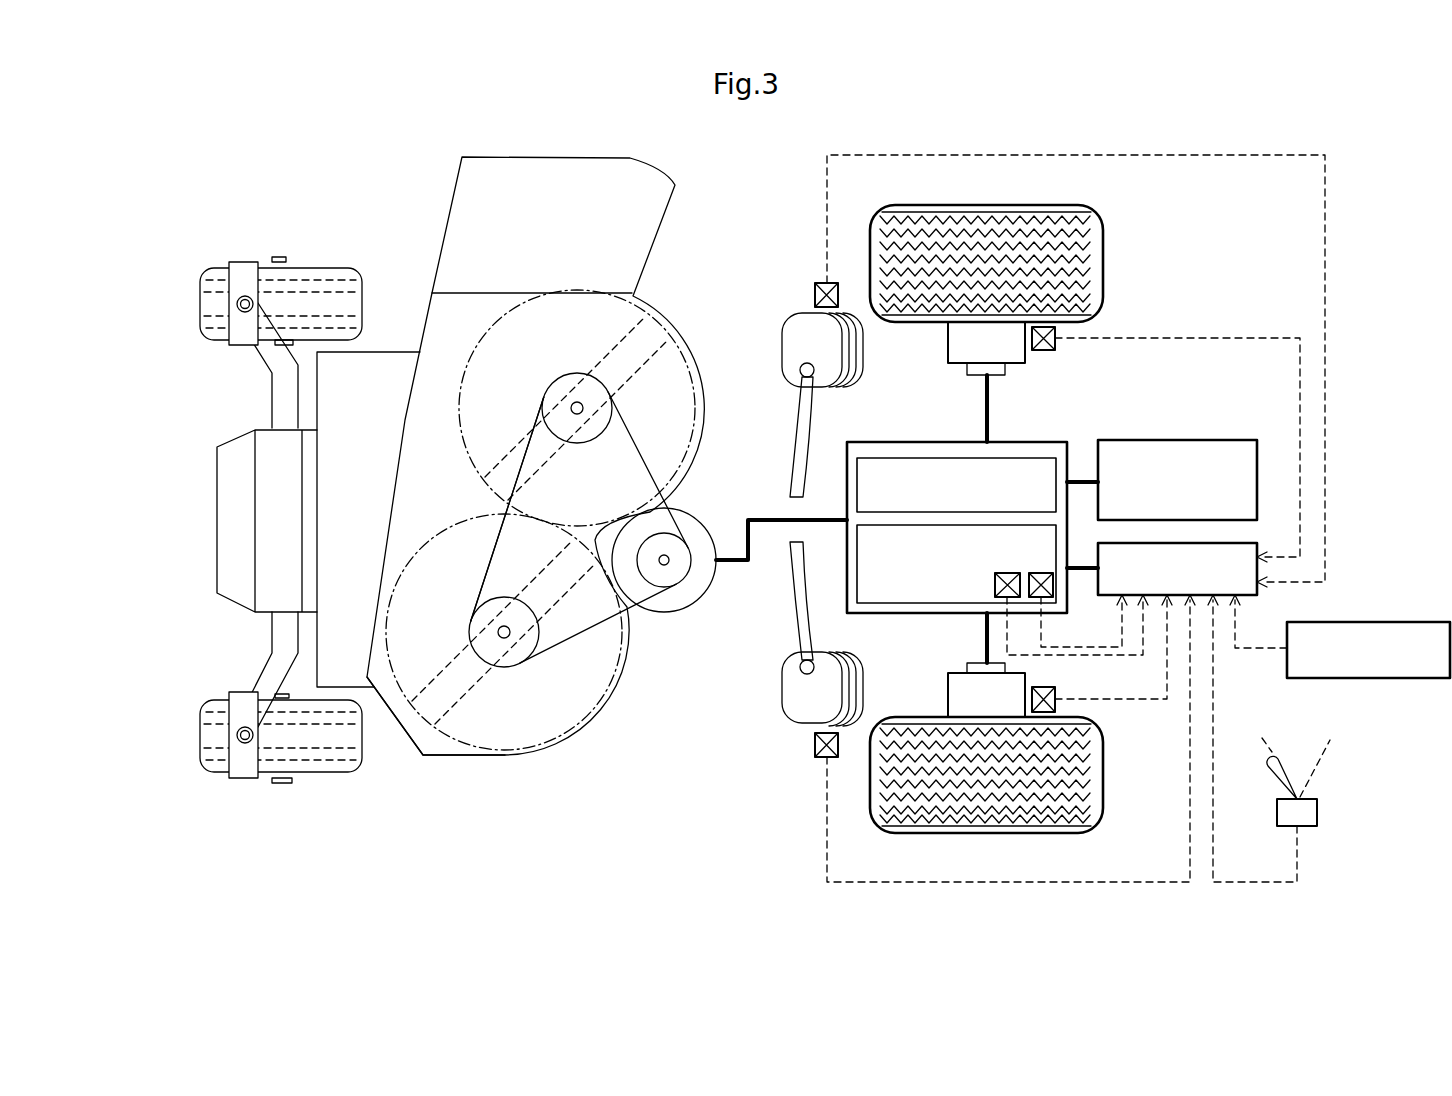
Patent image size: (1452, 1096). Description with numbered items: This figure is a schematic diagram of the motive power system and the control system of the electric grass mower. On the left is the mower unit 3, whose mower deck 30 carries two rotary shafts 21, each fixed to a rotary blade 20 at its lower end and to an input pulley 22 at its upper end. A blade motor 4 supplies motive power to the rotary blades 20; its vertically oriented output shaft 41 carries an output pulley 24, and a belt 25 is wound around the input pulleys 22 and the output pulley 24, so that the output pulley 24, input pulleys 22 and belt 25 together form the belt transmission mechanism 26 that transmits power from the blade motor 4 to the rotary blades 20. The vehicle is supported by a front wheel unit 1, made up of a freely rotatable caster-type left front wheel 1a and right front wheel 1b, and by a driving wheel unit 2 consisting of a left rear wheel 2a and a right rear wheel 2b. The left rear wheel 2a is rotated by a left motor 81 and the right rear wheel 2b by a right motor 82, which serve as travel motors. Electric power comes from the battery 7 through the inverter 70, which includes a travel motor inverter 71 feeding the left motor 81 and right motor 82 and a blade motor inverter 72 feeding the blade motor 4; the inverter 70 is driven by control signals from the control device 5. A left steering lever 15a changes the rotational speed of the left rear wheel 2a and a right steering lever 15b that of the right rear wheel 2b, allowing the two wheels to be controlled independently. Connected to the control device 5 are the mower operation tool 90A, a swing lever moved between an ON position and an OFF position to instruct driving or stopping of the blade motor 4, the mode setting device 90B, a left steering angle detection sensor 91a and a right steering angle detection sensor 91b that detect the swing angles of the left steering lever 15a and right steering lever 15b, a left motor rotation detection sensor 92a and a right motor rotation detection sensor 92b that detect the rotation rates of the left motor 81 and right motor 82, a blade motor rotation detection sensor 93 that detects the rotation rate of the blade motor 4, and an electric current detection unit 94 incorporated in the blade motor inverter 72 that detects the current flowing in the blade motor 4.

The front wheel unit 1 is at (221, 520).
The left front wheel 1a is at (200, 742).
The right front wheel 1b is at (200, 303).
The driving wheel unit 2 is at (986, 522).
The left rear wheel 2a is at (972, 835).
The right rear wheel 2b is at (973, 205).
The mower unit 3 is at (406, 747).
The blade motor 4 is at (704, 612).
The control device 5 is at (1250, 598).
The battery 7 is at (1257, 477).
The left steering lever 15a is at (807, 593).
The right steering lever 15b is at (805, 447).
The rotary blade 20 is at (517, 447).
The rotary shaft 21 is at (577, 402).
The input pulley 22 is at (558, 395).
The output pulley 24 is at (653, 567).
The belt 25 is at (637, 453).
The belt transmission mechanism 26 is at (478, 518).
The mower deck 30 is at (436, 742).
The output shaft 41 is at (667, 556).
The inverter 70 is at (917, 442).
The travel motor inverter 71 is at (1005, 458).
The blade motor inverter 72 is at (895, 603).
The left motor 81 is at (948, 697).
The right motor 82 is at (948, 342).
The mower operation tool 90A is at (1317, 813).
The mode setting device 90B is at (1353, 622).
The left steering angle detection sensor 91a is at (813, 745).
The right steering angle detection sensor 91b is at (815, 293).
The left motor rotation detection sensor 92a is at (1043, 688).
The right motor rotation detection sensor 92b is at (1043, 352).
The blade motor rotation detection sensor 93 is at (995, 585).
The electric current detection unit 94 is at (1054, 585).